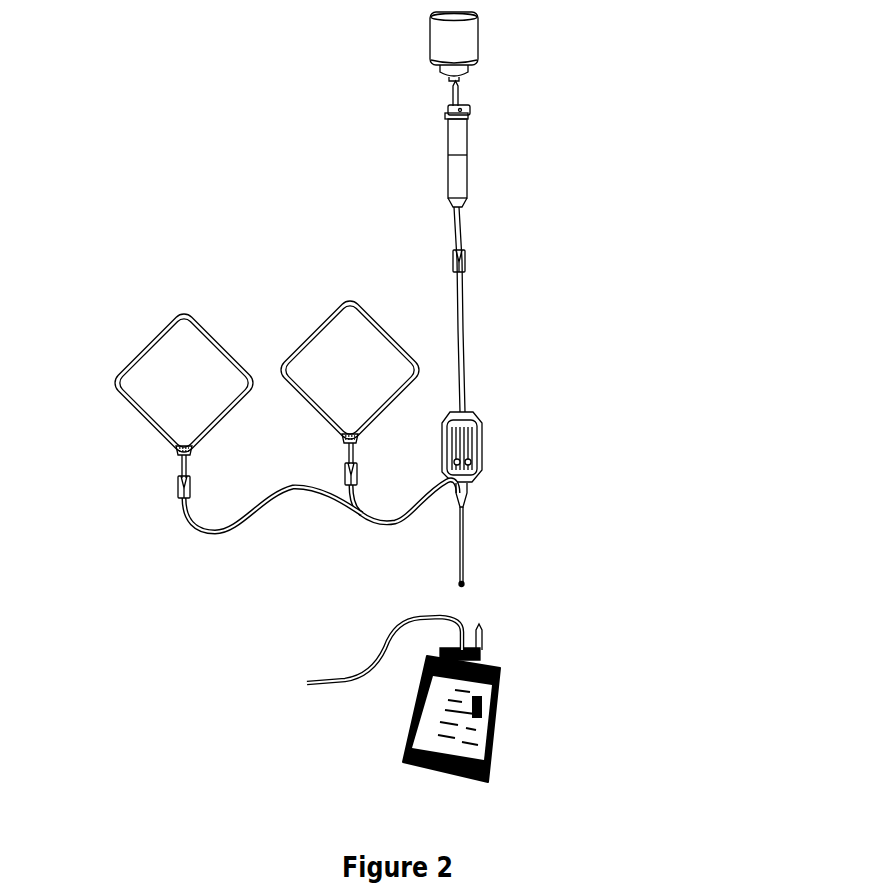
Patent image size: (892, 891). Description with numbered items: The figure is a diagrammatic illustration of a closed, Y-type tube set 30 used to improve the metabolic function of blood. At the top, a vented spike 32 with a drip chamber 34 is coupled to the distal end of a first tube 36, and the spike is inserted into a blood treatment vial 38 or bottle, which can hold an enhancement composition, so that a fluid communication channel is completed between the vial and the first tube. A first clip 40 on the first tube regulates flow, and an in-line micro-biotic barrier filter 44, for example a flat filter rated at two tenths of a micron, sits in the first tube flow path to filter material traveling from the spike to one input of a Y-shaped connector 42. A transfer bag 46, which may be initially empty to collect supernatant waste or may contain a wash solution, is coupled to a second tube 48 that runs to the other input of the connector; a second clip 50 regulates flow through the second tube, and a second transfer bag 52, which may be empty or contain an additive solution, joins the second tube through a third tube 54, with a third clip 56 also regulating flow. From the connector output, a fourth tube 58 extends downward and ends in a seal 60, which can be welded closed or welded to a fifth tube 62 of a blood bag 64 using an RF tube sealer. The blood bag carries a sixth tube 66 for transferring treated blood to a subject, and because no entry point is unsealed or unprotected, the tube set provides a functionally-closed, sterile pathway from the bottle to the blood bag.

The Y-type tube set 30 is at (345, 108).
The vented spike 32 is at (460, 91).
The drip chamber 34 is at (466, 135).
The first tube 36 is at (461, 329).
The blood treatment vial 38 is at (468, 37).
The first clip 40 is at (462, 263).
The Y-shaped connector 42 is at (467, 507).
The in-line micro-biotic barrier filter 44 is at (478, 440).
The transfer bag 46 is at (332, 325).
The second tube 48 is at (408, 515).
The second clip 50 is at (347, 475).
The second transfer bag 52 is at (167, 330).
The third tube 54 is at (230, 535).
The third clip 56 is at (180, 490).
The fourth tube 58 is at (464, 570).
The seal 60 is at (465, 585).
The fifth tube 62 is at (482, 630).
The blood bag 64 is at (500, 673).
The sixth tube 66 is at (352, 672).